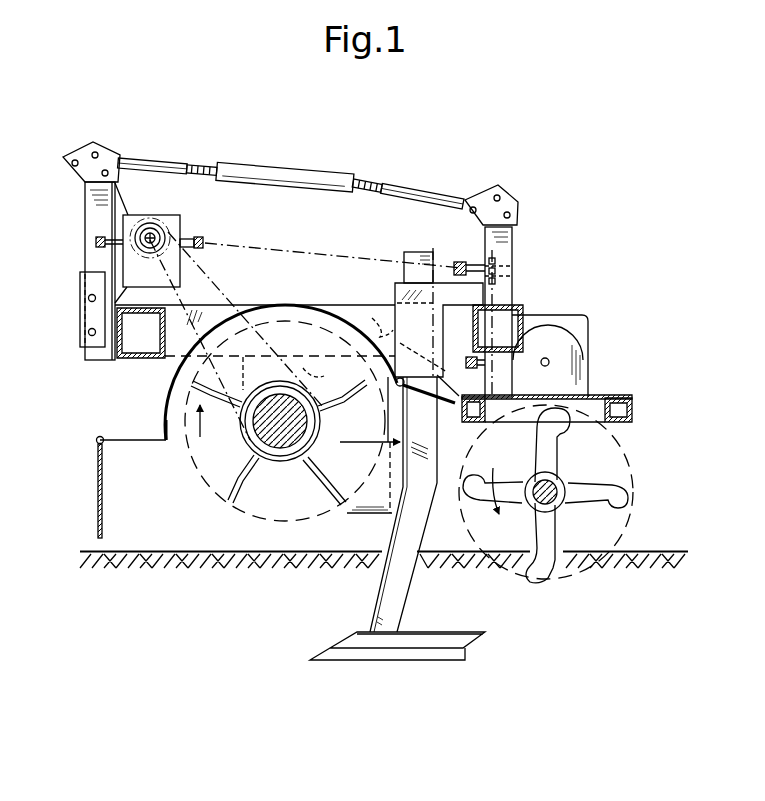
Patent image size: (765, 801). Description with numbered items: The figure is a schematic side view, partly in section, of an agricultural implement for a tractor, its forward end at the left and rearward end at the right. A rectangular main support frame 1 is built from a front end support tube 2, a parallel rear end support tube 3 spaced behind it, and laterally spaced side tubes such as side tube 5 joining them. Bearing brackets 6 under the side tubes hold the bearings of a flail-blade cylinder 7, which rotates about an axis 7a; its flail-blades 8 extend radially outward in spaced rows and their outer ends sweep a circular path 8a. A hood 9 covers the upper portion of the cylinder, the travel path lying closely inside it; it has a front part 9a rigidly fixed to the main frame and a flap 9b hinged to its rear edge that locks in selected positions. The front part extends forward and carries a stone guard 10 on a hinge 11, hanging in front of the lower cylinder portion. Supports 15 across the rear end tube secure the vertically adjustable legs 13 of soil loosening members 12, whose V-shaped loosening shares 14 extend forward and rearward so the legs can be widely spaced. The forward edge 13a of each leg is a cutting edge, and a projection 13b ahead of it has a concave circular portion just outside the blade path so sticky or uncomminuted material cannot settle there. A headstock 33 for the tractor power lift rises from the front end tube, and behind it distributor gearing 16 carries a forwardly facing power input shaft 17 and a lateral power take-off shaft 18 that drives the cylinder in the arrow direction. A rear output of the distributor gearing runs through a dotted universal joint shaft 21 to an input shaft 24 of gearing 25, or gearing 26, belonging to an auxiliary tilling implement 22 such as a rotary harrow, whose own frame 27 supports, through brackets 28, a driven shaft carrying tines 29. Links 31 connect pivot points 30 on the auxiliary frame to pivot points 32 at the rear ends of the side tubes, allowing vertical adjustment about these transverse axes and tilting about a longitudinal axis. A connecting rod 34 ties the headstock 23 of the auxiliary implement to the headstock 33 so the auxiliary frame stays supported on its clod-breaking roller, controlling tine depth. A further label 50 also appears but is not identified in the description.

The main support frame 1 is at (117, 358).
The front end support tube 2 is at (82, 322).
The rear end support tube 3 is at (511, 328).
The side tube 5 is at (316, 304).
The bearing brackets 6 is at (308, 380).
The flail-blade cylinder 7 is at (284, 466).
The axis 7a is at (246, 442).
The flail-blades 8 is at (226, 478).
The circular path 8a is at (268, 524).
The hood 9 is at (250, 304).
The front part 9a is at (164, 410).
The flap 9b is at (452, 408).
The stone guard 10 is at (104, 522).
The hinge 11 is at (96, 441).
The soil loosening members 12 is at (371, 595).
The legs 13 is at (418, 252).
The forward edge 13a is at (376, 458).
The projection 13b is at (358, 513).
The loosening shares 14 is at (332, 648).
The supports 15 is at (394, 283).
The distributor gearing 16 is at (181, 218).
The power input shaft 17 is at (96, 242).
The lateral power take-off shaft 18 is at (150, 228).
The universal joint shaft 21 is at (236, 246).
The auxiliary implement 22 is at (600, 396).
The headstock 23 is at (514, 233).
The input shaft 24 is at (463, 262).
The gearing 25 is at (512, 288).
The gearing 26 is at (588, 363).
The auxiliary frame 27 is at (633, 409).
The brackets 28 is at (563, 448).
The tines 29 is at (633, 504).
The pivot points 30 is at (472, 446).
The links 31 is at (419, 435).
The pivot points 32 is at (364, 312).
The headstock 33 is at (88, 210).
The connecting rod 34 is at (280, 170).
The pivot 50 is at (374, 380).